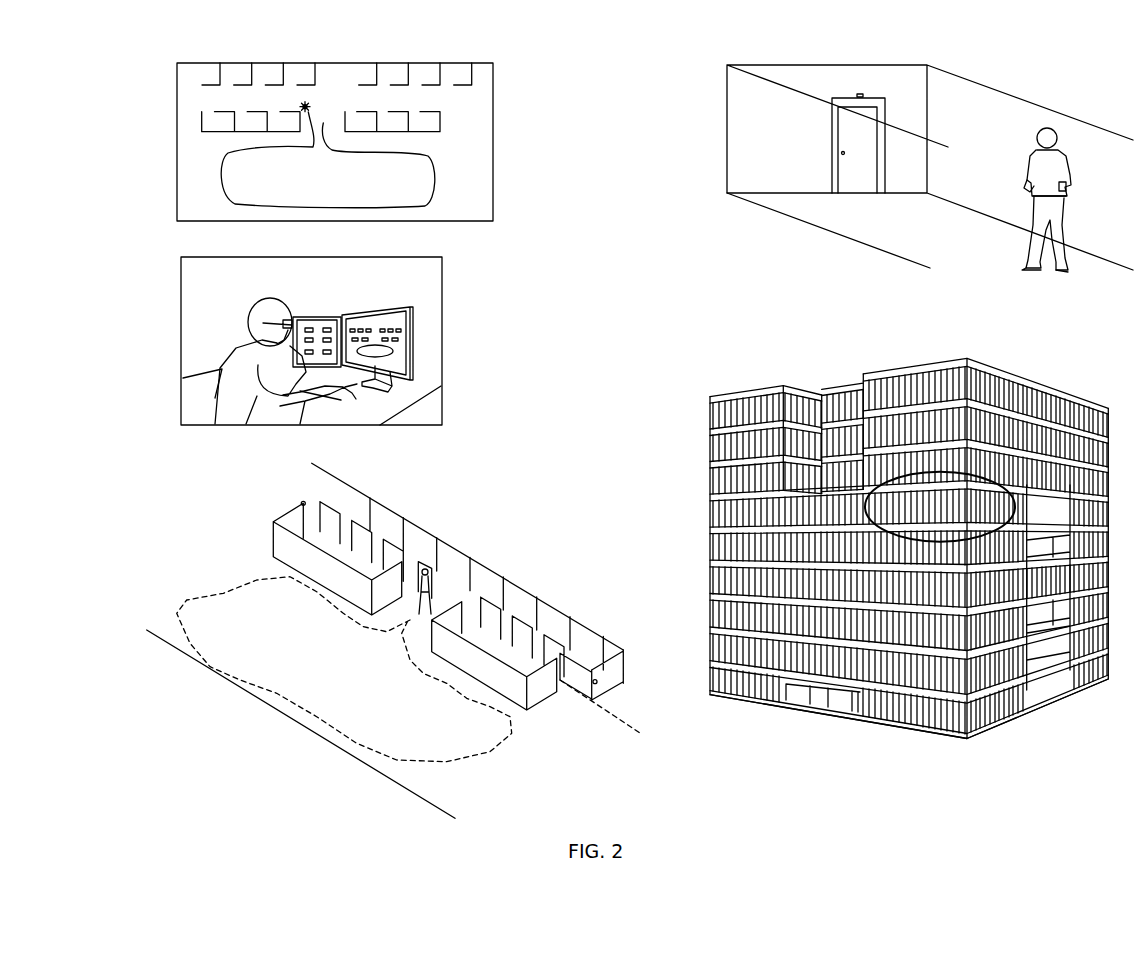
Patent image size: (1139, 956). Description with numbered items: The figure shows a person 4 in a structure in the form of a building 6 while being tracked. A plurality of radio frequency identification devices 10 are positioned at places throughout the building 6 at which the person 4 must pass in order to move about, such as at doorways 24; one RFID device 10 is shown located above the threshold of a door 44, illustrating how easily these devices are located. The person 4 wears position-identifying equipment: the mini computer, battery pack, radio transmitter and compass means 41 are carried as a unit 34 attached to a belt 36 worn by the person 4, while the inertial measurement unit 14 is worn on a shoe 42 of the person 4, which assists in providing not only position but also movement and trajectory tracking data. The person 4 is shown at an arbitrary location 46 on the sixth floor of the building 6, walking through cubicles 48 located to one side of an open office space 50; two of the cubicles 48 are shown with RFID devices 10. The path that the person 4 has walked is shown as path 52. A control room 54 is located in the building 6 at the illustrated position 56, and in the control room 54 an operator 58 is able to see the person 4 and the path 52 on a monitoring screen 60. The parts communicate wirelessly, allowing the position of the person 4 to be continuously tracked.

The person 4 is at (315, 106).
The building 6 is at (780, 63).
The radio frequency identification (RFID) device 10 is at (860, 94).
The inertial measurement unit 14 is at (1022, 263).
The doorway 24 is at (832, 137).
The unit 34 is at (1066, 183).
The belt 36 is at (1030, 188).
The compass means 41 is at (1068, 193).
The shoe 42 is at (1028, 268).
The door 44 is at (847, 173).
The arbitrary location 46 is at (197, 153).
The cubicles 48 is at (458, 70).
The open office space 50 is at (316, 190).
The path 52 is at (438, 187).
The control room 54 is at (181, 326).
The position 56 is at (725, 442).
The operator 58 is at (235, 340).
The monitoring screen 60 is at (493, 173).